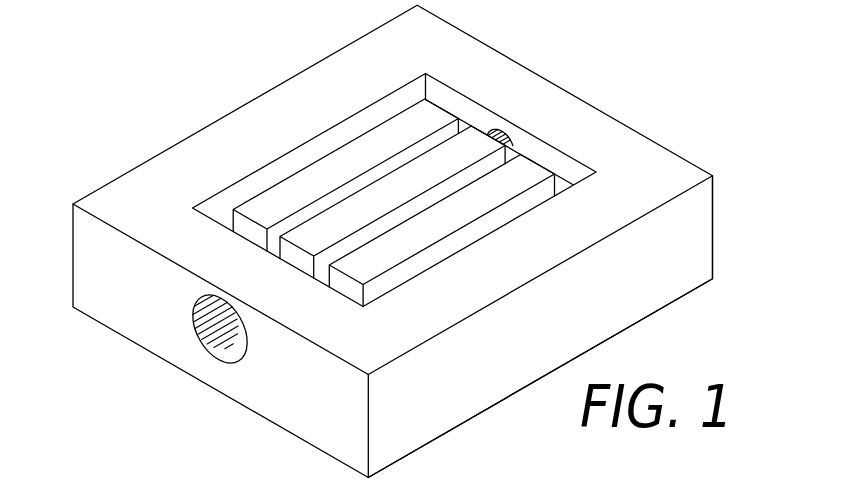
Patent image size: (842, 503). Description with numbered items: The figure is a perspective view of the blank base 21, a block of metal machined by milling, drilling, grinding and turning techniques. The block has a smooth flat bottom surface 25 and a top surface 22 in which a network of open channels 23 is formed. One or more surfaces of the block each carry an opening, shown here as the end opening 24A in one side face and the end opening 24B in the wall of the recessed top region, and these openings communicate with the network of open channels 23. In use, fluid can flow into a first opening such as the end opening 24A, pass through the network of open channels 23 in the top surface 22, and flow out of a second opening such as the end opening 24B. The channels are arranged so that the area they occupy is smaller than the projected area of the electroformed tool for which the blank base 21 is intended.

The blank base 21 is at (388, 241).
The top surface 22 is at (242, 145).
The open channels 23 is at (443, 102).
The end opening 24A is at (216, 343).
The end opening 24B is at (530, 160).
The bottom surface 25 is at (652, 315).